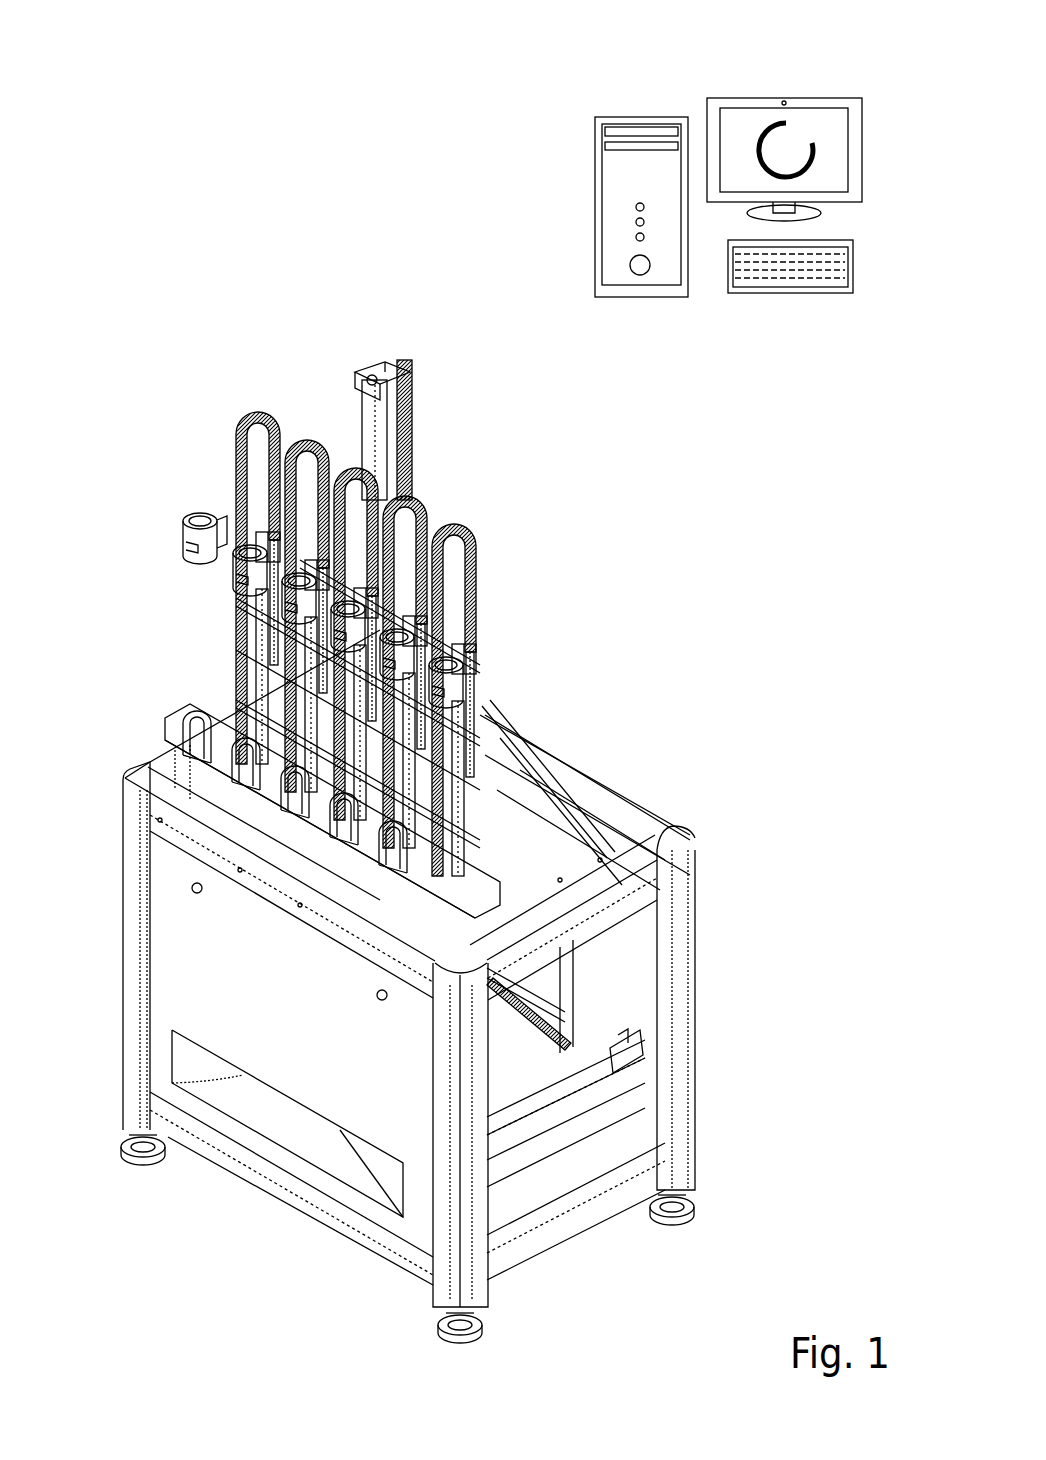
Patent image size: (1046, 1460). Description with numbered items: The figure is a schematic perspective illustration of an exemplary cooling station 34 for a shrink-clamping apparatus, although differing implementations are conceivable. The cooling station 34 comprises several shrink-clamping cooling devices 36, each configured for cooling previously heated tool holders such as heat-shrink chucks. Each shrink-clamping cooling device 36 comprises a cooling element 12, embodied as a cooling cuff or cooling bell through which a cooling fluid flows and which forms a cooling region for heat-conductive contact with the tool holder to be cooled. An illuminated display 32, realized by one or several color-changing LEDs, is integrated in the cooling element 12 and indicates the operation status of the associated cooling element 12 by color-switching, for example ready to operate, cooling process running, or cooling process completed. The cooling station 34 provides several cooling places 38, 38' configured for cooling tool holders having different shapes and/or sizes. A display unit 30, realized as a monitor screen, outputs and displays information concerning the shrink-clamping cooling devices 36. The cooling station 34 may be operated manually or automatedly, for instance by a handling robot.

The cooling element 12 is at (233, 582).
The display unit 30 is at (748, 118).
The illuminated display 32 is at (233, 568).
The cooling station 34 is at (348, 212).
The shrink-clamping cooling device 36 is at (275, 550).
The cooling place 38 is at (227, 563).
The cooling place 38' is at (172, 463).